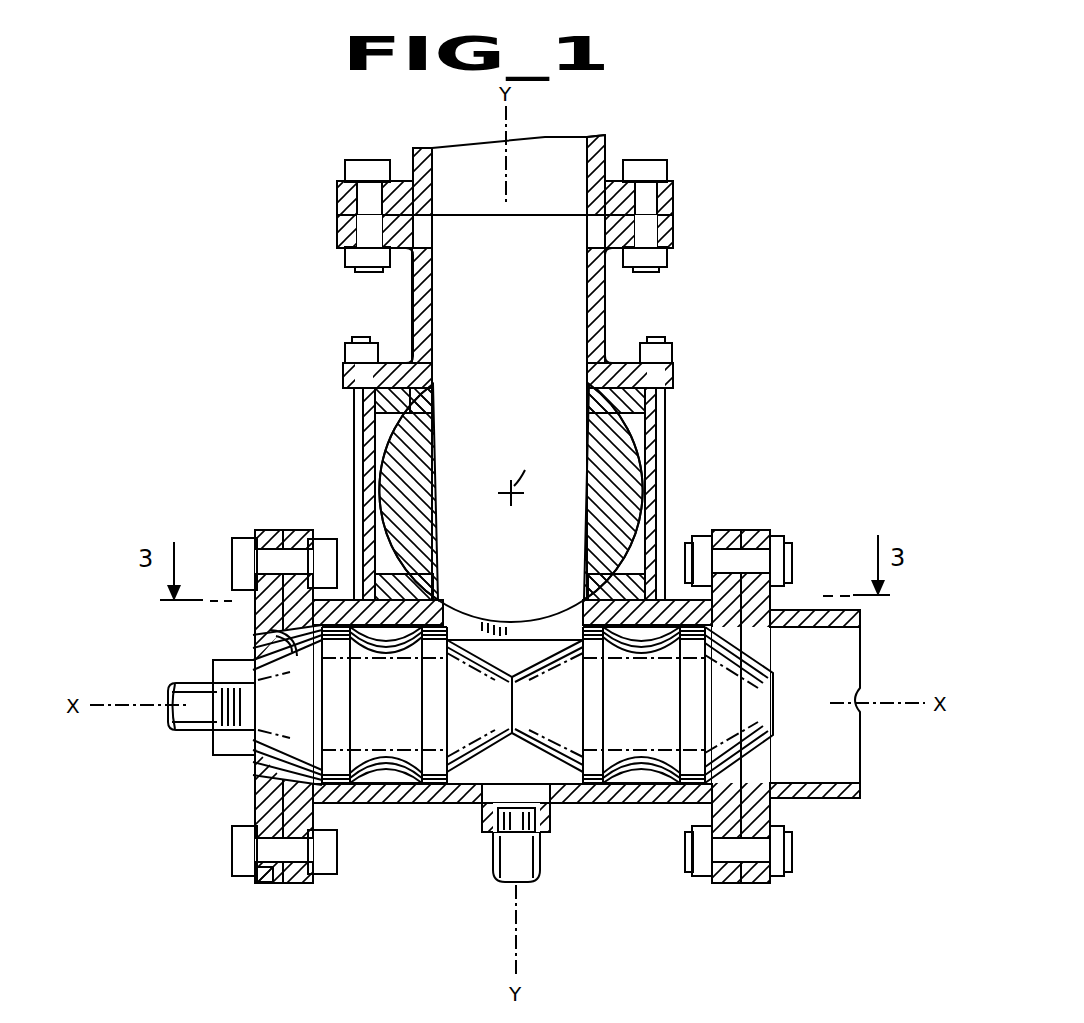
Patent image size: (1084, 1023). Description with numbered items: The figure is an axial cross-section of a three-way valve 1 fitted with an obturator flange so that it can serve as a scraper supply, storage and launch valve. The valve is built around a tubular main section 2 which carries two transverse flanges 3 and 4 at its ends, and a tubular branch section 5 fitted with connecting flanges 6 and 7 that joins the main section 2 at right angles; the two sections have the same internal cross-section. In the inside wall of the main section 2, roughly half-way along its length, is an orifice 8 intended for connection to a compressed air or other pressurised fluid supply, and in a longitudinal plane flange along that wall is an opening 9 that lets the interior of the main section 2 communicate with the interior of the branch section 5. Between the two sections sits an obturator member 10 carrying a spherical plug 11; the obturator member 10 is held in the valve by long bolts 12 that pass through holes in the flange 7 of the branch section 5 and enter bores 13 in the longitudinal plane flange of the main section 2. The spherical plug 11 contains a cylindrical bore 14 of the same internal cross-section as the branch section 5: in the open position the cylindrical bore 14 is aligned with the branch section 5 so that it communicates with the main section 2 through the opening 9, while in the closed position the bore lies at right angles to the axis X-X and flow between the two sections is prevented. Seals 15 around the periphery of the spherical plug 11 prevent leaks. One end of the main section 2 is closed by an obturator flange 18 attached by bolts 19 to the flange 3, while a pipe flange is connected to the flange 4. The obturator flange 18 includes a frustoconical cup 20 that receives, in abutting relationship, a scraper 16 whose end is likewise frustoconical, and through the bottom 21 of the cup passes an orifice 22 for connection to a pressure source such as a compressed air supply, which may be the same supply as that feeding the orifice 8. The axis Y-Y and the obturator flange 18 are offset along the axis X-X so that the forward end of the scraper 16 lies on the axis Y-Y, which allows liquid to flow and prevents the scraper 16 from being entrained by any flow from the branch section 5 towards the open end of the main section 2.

The three-way valve 1 is at (750, 358).
The tubular main section 2 is at (586, 795).
The transverse flange 3 is at (308, 536).
The transverse flange 4 is at (726, 533).
The tubular branch section 5 is at (605, 291).
The connecting flange 6 is at (338, 235).
The connecting flange 7 is at (343, 373).
The orifice 8 is at (486, 820).
The opening 9 is at (515, 706).
The obturator member 10 is at (670, 411).
The spherical plug 11 is at (626, 462).
The long bolts 12 is at (363, 340).
The bores 13 is at (356, 640).
The cylindrical bore 14 is at (398, 413).
The seals 15 is at (607, 412).
The scraper 16 is at (397, 725).
The obturator flange 18 is at (268, 876).
The fixing means (bolts) 19 is at (246, 536).
The cup 20 is at (296, 650).
The bottom of the cup 21 is at (250, 762).
The orifice 22 is at (226, 690).